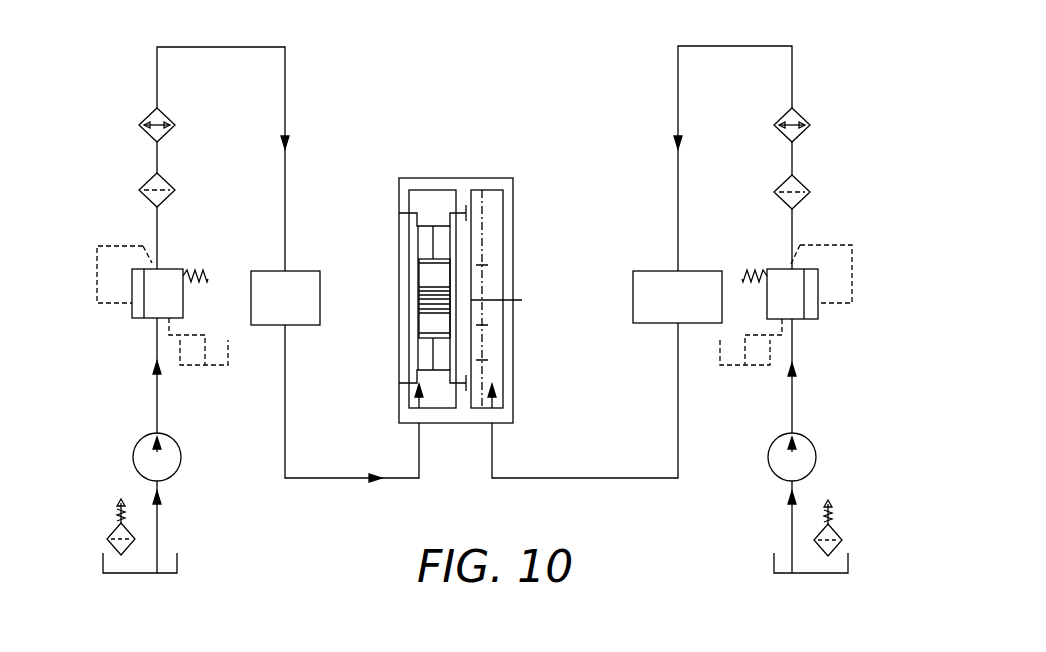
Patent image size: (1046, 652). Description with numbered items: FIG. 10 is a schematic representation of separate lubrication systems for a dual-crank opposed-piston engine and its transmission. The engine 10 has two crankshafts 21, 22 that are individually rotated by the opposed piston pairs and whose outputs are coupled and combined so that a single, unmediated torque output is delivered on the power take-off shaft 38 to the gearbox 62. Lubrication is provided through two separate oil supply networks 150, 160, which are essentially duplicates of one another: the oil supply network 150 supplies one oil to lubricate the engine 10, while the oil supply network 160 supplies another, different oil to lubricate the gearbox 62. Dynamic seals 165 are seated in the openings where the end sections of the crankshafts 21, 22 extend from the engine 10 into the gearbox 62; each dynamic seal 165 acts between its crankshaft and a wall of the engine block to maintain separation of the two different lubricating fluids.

The engine 10 is at (432, 178).
The crankshaft 21 is at (408, 213).
The crankshaft 22 is at (404, 383).
The power take-off shaft 38 is at (522, 300).
The gearbox 62 is at (530, 216).
The oil supply network 150 is at (103, 109).
The oil supply network 160 is at (813, 101).
The dynamic seal 165 is at (468, 213).